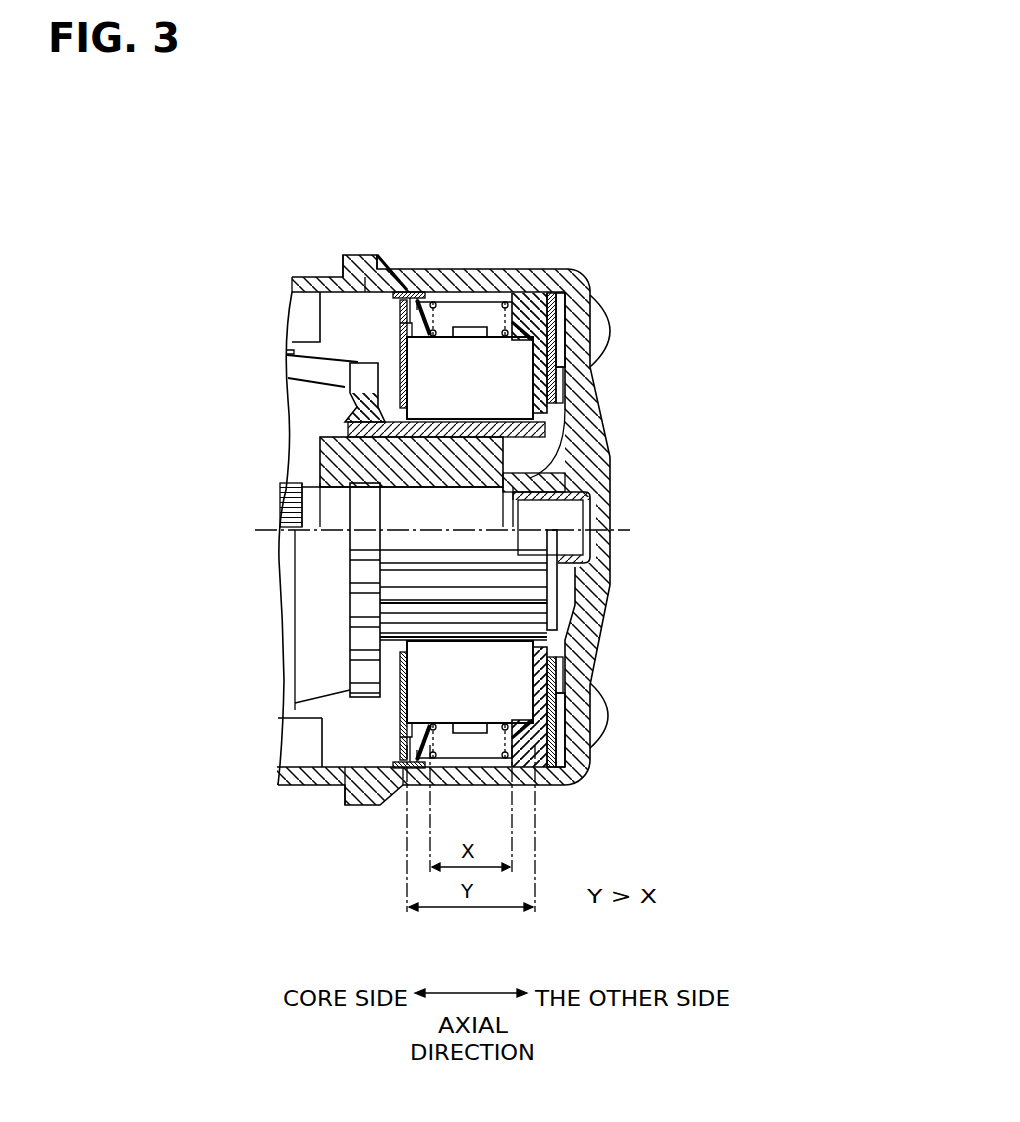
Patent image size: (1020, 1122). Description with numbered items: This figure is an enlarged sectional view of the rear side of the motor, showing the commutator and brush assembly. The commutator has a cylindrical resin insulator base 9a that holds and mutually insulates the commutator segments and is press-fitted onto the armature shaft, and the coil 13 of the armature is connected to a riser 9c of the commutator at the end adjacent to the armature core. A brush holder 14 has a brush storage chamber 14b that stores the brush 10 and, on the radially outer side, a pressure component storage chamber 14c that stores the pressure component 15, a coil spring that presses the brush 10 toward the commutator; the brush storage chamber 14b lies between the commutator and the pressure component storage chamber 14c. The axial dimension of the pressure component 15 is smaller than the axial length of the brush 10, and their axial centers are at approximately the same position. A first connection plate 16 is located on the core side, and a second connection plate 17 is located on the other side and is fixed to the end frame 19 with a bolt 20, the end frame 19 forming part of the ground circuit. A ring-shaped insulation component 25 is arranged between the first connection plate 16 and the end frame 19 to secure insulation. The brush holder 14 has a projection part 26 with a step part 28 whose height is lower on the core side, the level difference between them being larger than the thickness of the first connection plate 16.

The insulator base 9a is at (548, 447).
The riser 9c is at (363, 370).
The brush 10 is at (502, 396).
The coil 13 is at (303, 393).
The brush holder 14 is at (531, 307).
The brush storage chamber 14b is at (558, 358).
The pressure component storage chamber 14c is at (467, 315).
The pressure component 15 is at (512, 317).
The first connection plate 16 is at (340, 297).
The second connection plate 17 is at (555, 318).
The end frame 19 is at (605, 550).
The bolt 20 is at (606, 713).
The insulation component 25 is at (410, 290).
The projection part 26 is at (345, 408).
The step part 28 is at (423, 307).